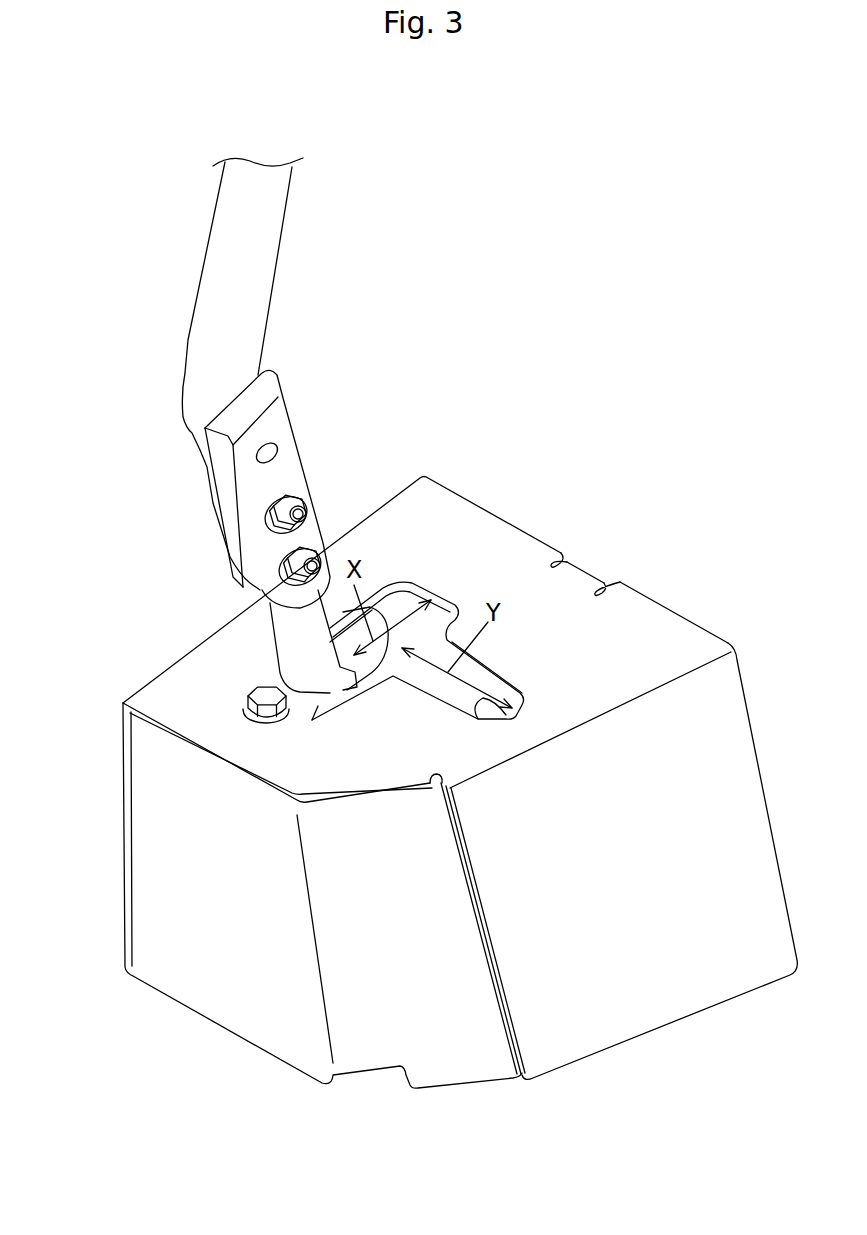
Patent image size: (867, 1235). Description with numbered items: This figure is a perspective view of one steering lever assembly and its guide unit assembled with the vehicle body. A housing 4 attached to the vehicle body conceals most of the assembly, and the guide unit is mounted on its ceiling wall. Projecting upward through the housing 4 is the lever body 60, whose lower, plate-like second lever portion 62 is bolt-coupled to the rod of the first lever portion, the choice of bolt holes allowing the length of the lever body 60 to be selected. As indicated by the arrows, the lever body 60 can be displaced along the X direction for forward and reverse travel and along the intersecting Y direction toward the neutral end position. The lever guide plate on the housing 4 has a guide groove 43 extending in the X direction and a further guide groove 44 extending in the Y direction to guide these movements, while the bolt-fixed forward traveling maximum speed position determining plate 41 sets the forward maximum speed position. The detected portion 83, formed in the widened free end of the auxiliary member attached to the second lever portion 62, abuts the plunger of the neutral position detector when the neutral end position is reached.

The housing 4 is at (527, 528).
The forward traveling maximum speed position determining plate 41 is at (273, 672).
The guide groove 43 is at (397, 588).
The guide groove 44 is at (508, 686).
The lever body 60 is at (165, 467).
The second lever portion 62 is at (308, 448).
The detected portion 83 is at (367, 667).